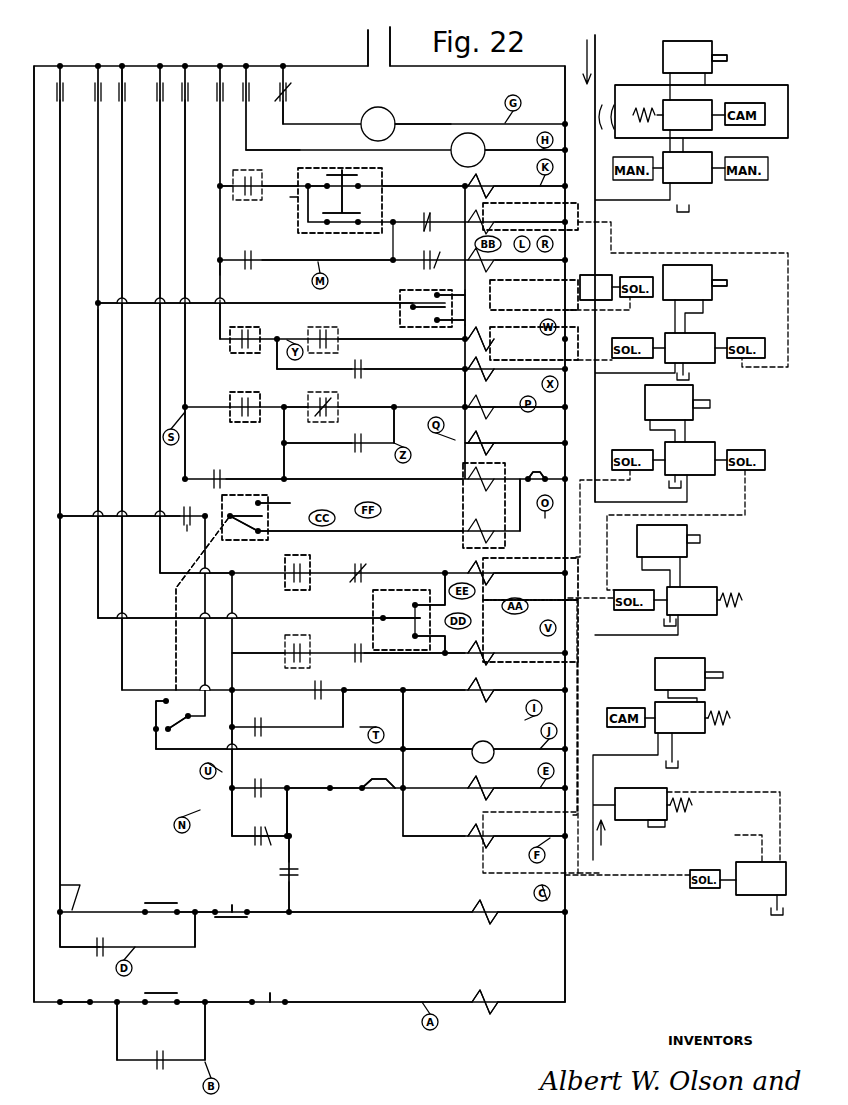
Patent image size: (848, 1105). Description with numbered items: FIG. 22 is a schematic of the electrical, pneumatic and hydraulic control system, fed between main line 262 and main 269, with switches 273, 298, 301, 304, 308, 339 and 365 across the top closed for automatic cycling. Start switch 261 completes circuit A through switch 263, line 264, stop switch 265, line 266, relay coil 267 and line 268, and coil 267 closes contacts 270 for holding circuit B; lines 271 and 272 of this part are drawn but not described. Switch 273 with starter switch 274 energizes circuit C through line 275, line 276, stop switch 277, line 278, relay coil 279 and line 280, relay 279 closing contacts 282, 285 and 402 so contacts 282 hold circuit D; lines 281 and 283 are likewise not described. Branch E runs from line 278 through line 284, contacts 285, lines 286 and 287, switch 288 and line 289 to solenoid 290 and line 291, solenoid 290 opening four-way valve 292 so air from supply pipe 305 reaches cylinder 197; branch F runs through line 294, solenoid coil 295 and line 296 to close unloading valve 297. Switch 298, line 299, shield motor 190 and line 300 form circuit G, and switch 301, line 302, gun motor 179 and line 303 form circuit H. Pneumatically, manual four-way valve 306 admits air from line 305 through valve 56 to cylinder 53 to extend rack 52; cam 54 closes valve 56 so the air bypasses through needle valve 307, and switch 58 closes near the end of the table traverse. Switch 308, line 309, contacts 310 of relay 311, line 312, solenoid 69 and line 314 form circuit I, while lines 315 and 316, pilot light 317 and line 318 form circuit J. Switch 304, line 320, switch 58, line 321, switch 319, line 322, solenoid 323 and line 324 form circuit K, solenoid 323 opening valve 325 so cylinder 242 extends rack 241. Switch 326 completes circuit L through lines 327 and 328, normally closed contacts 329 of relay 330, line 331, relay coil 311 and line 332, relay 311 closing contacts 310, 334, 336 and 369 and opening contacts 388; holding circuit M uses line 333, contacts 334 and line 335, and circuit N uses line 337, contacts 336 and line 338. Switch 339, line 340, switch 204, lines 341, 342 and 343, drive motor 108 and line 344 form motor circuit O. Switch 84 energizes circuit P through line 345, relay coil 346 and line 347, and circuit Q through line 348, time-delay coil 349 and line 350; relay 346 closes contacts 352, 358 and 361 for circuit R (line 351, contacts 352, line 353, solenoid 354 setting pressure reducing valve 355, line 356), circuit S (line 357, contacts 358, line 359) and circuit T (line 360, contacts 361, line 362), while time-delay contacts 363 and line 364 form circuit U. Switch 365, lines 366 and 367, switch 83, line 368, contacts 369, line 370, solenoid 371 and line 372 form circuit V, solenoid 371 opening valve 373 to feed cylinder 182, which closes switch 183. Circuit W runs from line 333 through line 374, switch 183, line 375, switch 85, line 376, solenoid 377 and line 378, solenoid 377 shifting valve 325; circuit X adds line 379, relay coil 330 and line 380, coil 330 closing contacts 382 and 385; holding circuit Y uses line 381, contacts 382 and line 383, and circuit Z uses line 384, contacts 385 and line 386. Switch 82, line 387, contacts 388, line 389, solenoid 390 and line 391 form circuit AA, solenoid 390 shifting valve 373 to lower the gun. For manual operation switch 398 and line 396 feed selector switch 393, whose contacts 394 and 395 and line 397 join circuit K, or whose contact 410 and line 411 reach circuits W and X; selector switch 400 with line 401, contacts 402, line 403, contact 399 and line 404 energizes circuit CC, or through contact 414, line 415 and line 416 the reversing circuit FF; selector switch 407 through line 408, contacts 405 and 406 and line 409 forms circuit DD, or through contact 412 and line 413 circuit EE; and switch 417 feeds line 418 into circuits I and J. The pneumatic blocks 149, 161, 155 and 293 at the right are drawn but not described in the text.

The supply line 262 is at (34, 64).
The contact 273 is at (62, 86).
The contact 398 is at (100, 86).
The contact 308 is at (124, 86).
The contact 365 is at (163, 86).
The contact 339 is at (187, 86).
The contact 304 is at (222, 86).
The contact 301 is at (248, 86).
The contact 298 is at (290, 92).
The line 299 is at (290, 118).
The supply line 269 is at (390, 52).
The motor 190 is at (388, 107).
The line 300 is at (422, 123).
The motor 179 is at (452, 144).
The line 303 is at (503, 148).
The line 309 is at (123, 116).
The line 302 is at (247, 133).
The line 320 is at (223, 157).
The line 321 is at (283, 184).
The relay 319 is at (366, 184).
The line 322 is at (448, 185).
The resistor 324 is at (485, 186).
The line 327 is at (297, 195).
The line 328 is at (385, 221).
The contact 329 is at (423, 214).
The contact 331 is at (448, 204).
The solenoid 323 is at (498, 189).
The relay 311 is at (490, 226).
The line 332 is at (528, 228).
The line 340 is at (186, 188).
The switch 58 is at (243, 200).
The relay 326 is at (345, 218).
The contact 333 is at (248, 252).
The line 335 is at (392, 258).
The contact 352 is at (427, 252).
The contact 353 is at (452, 258).
The line 334 is at (246, 262).
The line 351 is at (412, 261).
The relay 395 is at (434, 290).
The line 356 is at (515, 259).
The solenoid 354 is at (495, 265).
The line 396 is at (302, 303).
The line 393 is at (410, 297).
The contact 394 is at (413, 307).
The line 410 is at (437, 321).
The line 397 is at (476, 307).
The line 411 is at (467, 325).
The valve 355 is at (606, 280).
The cylinder 242 is at (700, 274).
The piston rod 241 is at (727, 285).
The valve 325 is at (702, 338).
The solenoid 377 is at (640, 339).
The cylinder 182 is at (683, 395).
The solenoid 390 is at (636, 449).
The valve 373 is at (705, 448).
The solenoid 371 is at (757, 451).
The line 366 is at (160, 258).
The contact 375 is at (248, 328).
The switch 85 is at (330, 330).
The line 374 is at (220, 335).
The switch 183 is at (245, 353).
The contact 382 is at (350, 355).
The line 376 is at (440, 340).
The relay 378 is at (548, 352).
The line 379 is at (463, 368).
The line 381 is at (297, 371).
The switch 84 is at (328, 400).
The line 383 is at (413, 368).
The line 330 is at (476, 373).
The line 346 is at (476, 396).
The resistor 380 is at (490, 378).
The line 341 is at (305, 407).
The line 345 is at (394, 406).
The line 347 is at (517, 410).
The resistor 349 is at (488, 438).
The line 350 is at (515, 444).
The contact 357 is at (221, 407).
The switch 204 is at (244, 422).
The line 386 is at (394, 410).
The line 348 is at (465, 445).
The line 342 is at (284, 443).
The contact 358 is at (216, 476).
The line 359 is at (256, 476).
The line 384 is at (288, 445).
The contact 385 is at (358, 452).
The relay 108 is at (463, 468).
The switch 344 is at (540, 474).
The line 343 is at (396, 480).
The line 275 is at (60, 378).
The line 408 is at (97, 457).
The line 401 is at (130, 514).
The contact 403 is at (187, 508).
The switch 399 is at (258, 502).
The line 404 is at (290, 503).
The contact 400 is at (262, 518).
The contact 414 is at (258, 531).
The line 415 is at (395, 530).
The line 416 is at (520, 522).
The line 402 is at (188, 530).
The contact 387 is at (306, 562).
The contact 388 is at (360, 560).
The resistor 389 is at (446, 570).
The line 391 is at (530, 564).
The line 367 is at (232, 612).
The switch 82 is at (297, 592).
The switch 407 is at (372, 598).
The line 405 is at (383, 618).
The contact 412 is at (415, 604).
The line 413 is at (445, 585).
The switch 83 is at (285, 642).
The contact 368 is at (330, 650).
The line 406 is at (415, 636).
The line 409 is at (447, 652).
The relay 372 is at (563, 653).
The line 418 is at (202, 635).
The line 369 is at (330, 655).
The contact 310 is at (314, 682).
The line 312 is at (378, 689).
The line 370 is at (434, 677).
The resistor 69 is at (498, 680).
The line 314 is at (508, 692).
The line 337 is at (233, 700).
The contact 361 is at (264, 720).
The line 362 is at (343, 714).
The line 315 is at (404, 714).
The switch 417 is at (155, 720).
The line 360 is at (236, 728).
The line 316 is at (467, 748).
The lamp 317 is at (483, 741).
The line 318 is at (493, 746).
The switch 289 is at (389, 773).
The solenoid 290 is at (474, 782).
The line 291 is at (526, 790).
The contact 363 is at (280, 779).
The relay 364 is at (259, 812).
The line 287 is at (298, 794).
The line 288 is at (338, 793).
The solenoid 295 is at (475, 832).
The line 296 is at (500, 838).
The contact 336 is at (250, 845).
The contact 338 is at (272, 840).
The line 286 is at (290, 846).
The contact 285 is at (300, 872).
The line 284 is at (292, 893).
The line 294 is at (440, 845).
The switch 274 is at (155, 902).
The line 276 is at (195, 910).
The switch 277 is at (236, 910).
The resistor 279 is at (477, 903).
The line 281 is at (68, 945).
The contact 282 is at (108, 943).
The line 283 is at (197, 924).
The line 278 is at (265, 916).
The line 280 is at (533, 917).
The line 263 is at (70, 1004).
The switch 261 is at (165, 993).
The line 264 is at (198, 996).
The switch 265 is at (272, 993).
The line 266 is at (345, 1004).
The resistor 267 is at (474, 996).
The line 268 is at (547, 1002).
The line 272 is at (205, 1032).
The line 271 is at (117, 1060).
The contact 270 is at (160, 1069).
The line 305 is at (598, 42).
The cylinder 53 is at (703, 48).
The piston rod 52 is at (727, 58).
The spring 307 is at (622, 104).
The valve 56 is at (672, 108).
The cam 54 is at (758, 104).
The valve 306 is at (693, 180).
The cylinder 197 is at (687, 533).
The valve 292 is at (705, 590).
The cylinder 149 is at (693, 665).
The cam 161 is at (630, 708).
The valve 155 is at (693, 725).
The valve 293 is at (598, 848).
The valve 297 is at (753, 892).